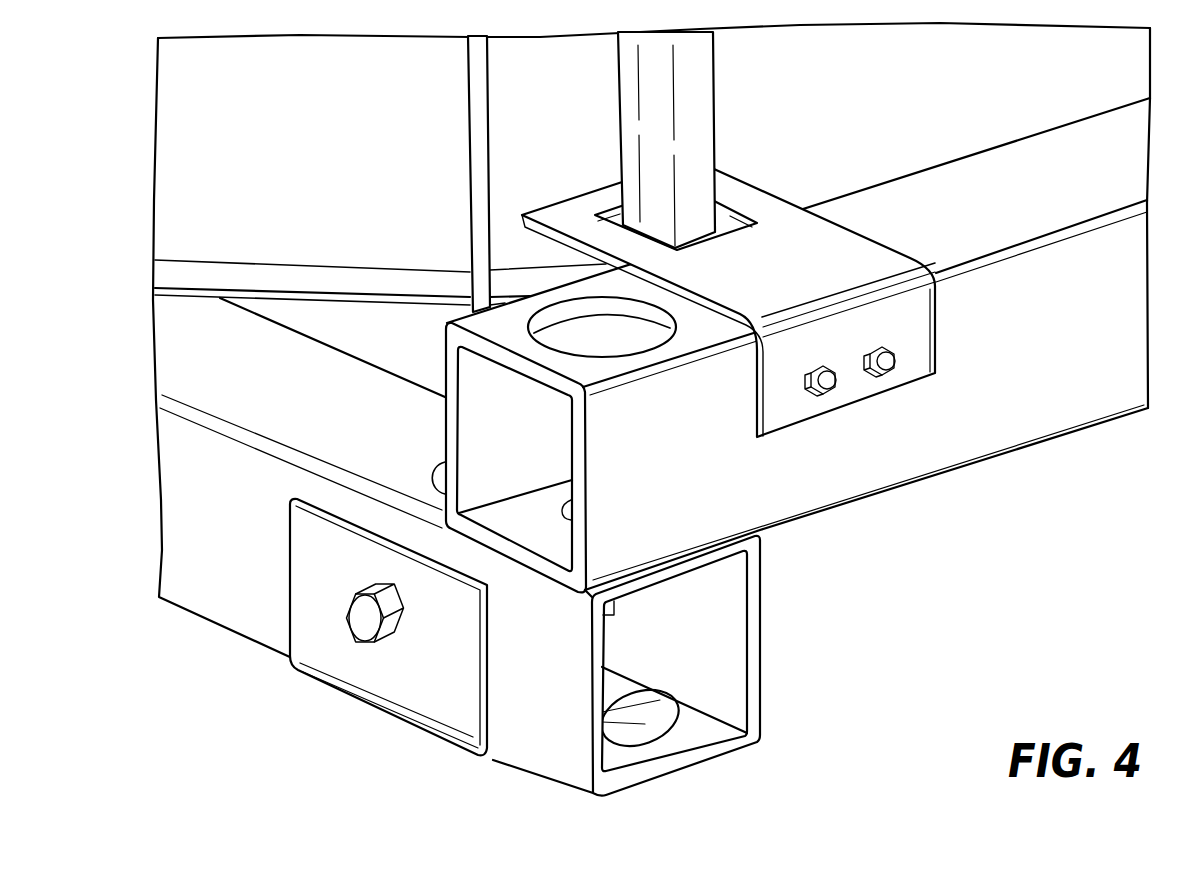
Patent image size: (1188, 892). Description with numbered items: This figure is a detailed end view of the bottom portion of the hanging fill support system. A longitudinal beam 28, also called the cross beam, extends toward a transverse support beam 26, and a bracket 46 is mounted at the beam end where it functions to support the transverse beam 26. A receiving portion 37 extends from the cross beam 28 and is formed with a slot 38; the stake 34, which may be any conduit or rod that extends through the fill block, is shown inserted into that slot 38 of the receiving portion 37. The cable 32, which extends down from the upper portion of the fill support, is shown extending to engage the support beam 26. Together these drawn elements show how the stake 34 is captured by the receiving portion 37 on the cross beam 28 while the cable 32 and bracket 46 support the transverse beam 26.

The transverse support beam 26 is at (760, 632).
The longitudinal beam 28 is at (820, 513).
The cable 32 is at (490, 138).
The stake 34 is at (716, 80).
The receiving portion 37 is at (801, 281).
The slot 38 is at (742, 218).
The bracket 46 is at (437, 682).